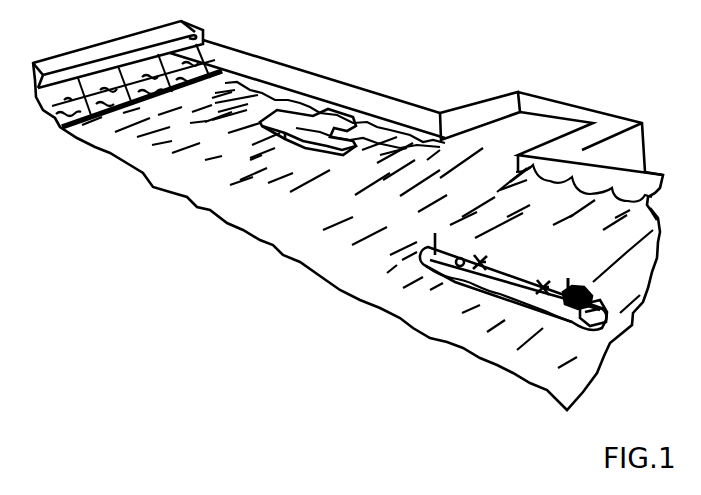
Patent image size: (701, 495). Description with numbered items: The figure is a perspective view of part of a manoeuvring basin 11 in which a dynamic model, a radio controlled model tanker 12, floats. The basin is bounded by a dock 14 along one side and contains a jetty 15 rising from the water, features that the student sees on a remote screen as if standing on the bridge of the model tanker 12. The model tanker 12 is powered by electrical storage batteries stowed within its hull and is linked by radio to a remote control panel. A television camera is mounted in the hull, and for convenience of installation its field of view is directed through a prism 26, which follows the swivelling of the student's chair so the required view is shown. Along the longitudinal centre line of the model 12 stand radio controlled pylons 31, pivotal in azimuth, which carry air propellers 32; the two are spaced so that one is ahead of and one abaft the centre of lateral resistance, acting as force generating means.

The manoeuvring basin 11 is at (335, 211).
The radio controlled model tanker 12 is at (470, 266).
The dock 14 is at (514, 135).
The jetty 15 is at (318, 123).
The prism 26 is at (464, 259).
The radio controlled pylons 31 is at (542, 287).
The air propellers 32 is at (484, 262).